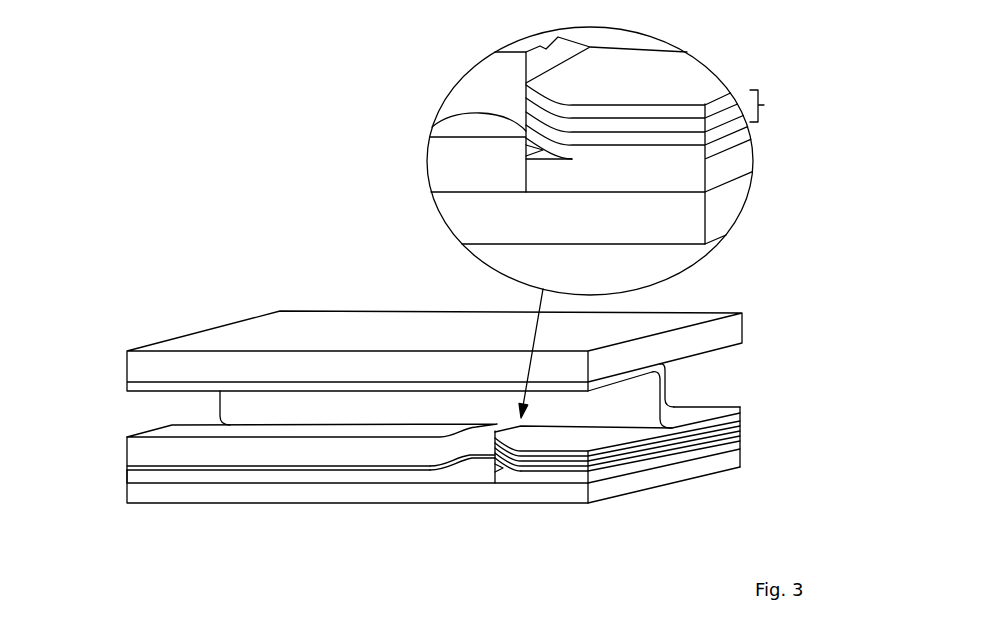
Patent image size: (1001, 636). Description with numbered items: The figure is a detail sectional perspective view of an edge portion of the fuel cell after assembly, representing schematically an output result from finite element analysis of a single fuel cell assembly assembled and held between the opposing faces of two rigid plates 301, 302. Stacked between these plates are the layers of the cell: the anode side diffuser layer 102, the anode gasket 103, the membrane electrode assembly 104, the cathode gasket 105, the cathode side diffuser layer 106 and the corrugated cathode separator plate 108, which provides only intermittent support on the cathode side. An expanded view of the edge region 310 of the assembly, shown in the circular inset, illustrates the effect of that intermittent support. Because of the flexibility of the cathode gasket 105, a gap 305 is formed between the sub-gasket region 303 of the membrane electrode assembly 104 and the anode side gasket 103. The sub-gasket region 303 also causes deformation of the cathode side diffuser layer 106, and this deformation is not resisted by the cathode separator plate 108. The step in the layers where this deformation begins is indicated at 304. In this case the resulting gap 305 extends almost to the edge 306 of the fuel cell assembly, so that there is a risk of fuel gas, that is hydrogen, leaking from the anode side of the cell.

The rigid plate 301 is at (153, 365).
The rigid plate 302 is at (163, 495).
The anode side diffuser layer 102 is at (137, 479).
The membrane electrode assembly 104 is at (137, 470).
The cathode side diffuser layer 106 is at (140, 452).
The corrugated cathode separator plate 108 is at (232, 405).
The anode gasket 103 is at (745, 163).
The sub-gasket region 303 is at (745, 135).
The cathode gasket 105 is at (764, 105).
The bent portion 304 is at (452, 469).
The gap 305 is at (530, 151).
The edge 306 is at (575, 479).
The edge region 310 is at (434, 127).